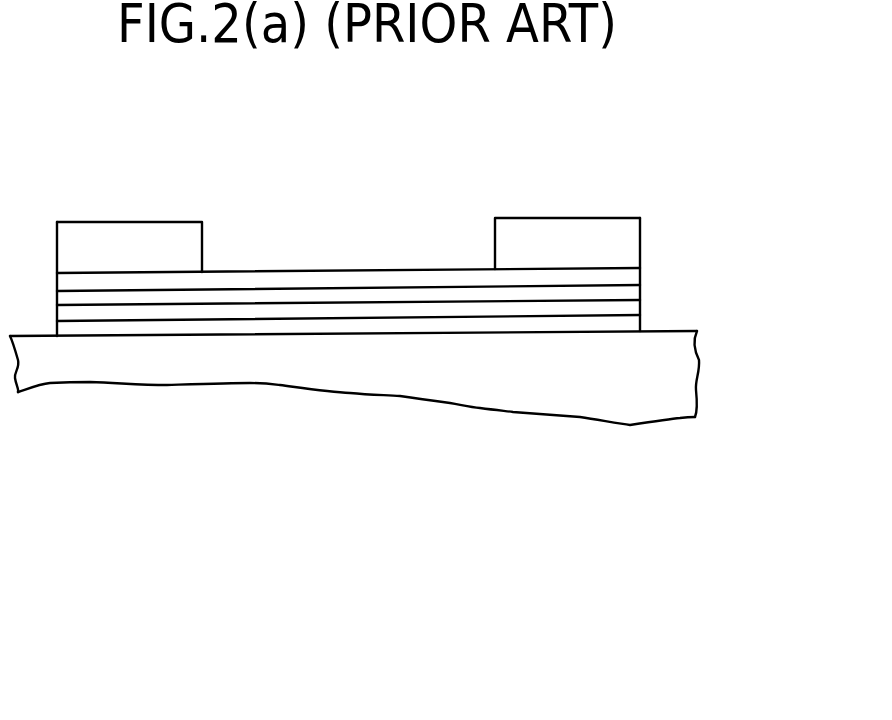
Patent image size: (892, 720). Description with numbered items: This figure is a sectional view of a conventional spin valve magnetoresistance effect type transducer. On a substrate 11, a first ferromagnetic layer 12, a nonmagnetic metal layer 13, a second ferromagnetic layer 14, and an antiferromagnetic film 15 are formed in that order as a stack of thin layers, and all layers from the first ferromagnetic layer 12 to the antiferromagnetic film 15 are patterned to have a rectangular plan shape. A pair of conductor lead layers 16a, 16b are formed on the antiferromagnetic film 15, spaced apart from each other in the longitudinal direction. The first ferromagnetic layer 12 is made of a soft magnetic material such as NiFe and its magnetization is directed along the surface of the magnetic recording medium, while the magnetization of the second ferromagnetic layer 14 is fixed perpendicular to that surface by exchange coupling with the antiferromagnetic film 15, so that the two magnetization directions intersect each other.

The substrate 11 is at (500, 393).
The first ferromagnetic layer 12 is at (628, 322).
The nonmagnetic metal layer 13 is at (631, 313).
The second ferromagnetic layer 14 is at (631, 292).
The antiferromagnetic film 15 is at (631, 280).
The conductor lead layer 16a is at (145, 227).
The conductor lead layer 16b is at (577, 233).